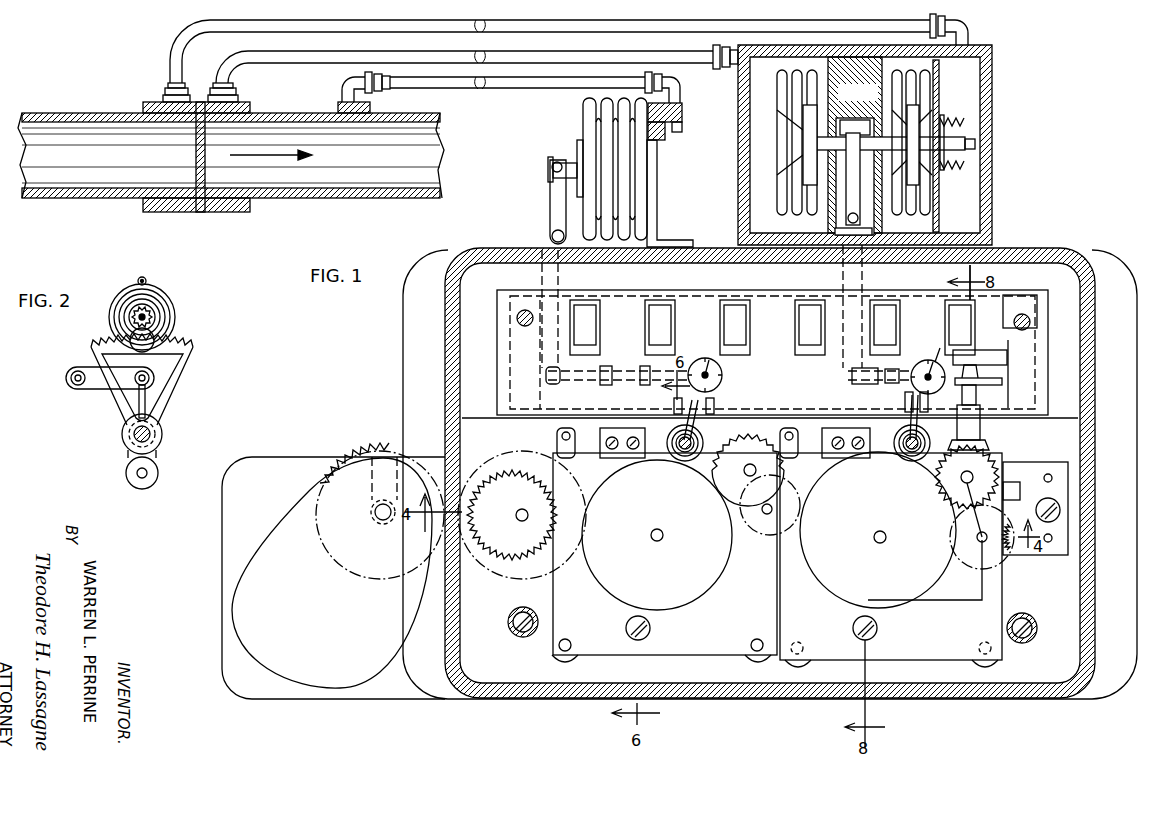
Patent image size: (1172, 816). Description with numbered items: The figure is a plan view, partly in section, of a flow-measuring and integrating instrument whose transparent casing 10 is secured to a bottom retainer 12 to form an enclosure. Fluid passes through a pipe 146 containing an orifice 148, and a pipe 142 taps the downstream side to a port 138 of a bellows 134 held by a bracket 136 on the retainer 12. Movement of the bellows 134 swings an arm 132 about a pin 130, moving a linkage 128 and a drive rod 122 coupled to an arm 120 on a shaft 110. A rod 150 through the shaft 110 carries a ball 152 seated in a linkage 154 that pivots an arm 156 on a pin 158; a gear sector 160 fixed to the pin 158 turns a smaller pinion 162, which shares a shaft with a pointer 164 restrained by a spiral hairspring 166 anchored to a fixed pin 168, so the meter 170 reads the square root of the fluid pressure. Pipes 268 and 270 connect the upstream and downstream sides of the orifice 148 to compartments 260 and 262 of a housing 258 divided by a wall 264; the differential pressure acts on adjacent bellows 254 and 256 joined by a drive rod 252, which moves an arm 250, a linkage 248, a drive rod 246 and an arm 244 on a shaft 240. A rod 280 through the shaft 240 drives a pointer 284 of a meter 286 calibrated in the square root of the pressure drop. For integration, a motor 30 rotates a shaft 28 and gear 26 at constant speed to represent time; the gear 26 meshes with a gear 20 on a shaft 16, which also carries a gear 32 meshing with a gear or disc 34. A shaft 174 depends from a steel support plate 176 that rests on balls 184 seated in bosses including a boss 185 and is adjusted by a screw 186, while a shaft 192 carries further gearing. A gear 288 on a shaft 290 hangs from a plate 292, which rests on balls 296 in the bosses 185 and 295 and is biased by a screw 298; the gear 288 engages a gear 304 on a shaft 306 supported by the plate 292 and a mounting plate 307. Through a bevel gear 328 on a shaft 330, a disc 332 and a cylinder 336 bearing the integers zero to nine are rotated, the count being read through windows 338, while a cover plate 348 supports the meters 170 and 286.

In FIG. 1, the casing 10 is at (705, 258).
In FIG. 1, the bottom retainer 12 is at (403, 330).
In FIG. 1, the shaft 16 is at (519, 521).
In FIG. 1, the gear 20 is at (506, 614).
In FIG. 1, the gear 26 is at (352, 448).
In FIG. 1, the shaft 28 is at (375, 513).
In FIG. 1, the motor 30 is at (372, 682).
In FIG. 1, the gear 32 is at (503, 470).
In FIG. 1, the gear or disc 34 is at (583, 565).
In FIG. 1, the shaft 110 is at (680, 460).
In FIG. 1, the arm 120 is at (660, 386).
In FIG. 1, the drive rod 122 is at (570, 383).
In FIG. 1, the linkage 128 is at (542, 262).
In FIG. 1, the pin 130 is at (552, 233).
In FIG. 1, the arm 132 is at (550, 191).
In FIG. 1, the bellows 134 is at (588, 130).
In FIG. 1, the bracket 136 is at (668, 242).
In FIG. 1, the port 138 is at (668, 136).
In FIG. 1, the pipe 142 is at (489, 87).
In FIG. 1, the pipe 146 is at (440, 192).
In FIG. 1, the orifice 148 is at (205, 165).
In FIG. 1, the rod 150 is at (676, 412).
In FIG. 2, the rod 150 is at (72, 373).
In FIG. 2, the ball 152 is at (71, 382).
In FIG. 1, the linkage 154 is at (716, 408).
In FIG. 2, the linkage 154 is at (97, 390).
In FIG. 2, the arm 156 is at (146, 402).
In FIG. 2, the pin 158 is at (150, 440).
In FIG. 2, the gear sector 160 is at (185, 348).
In FIG. 2, the pinion 162 is at (152, 318).
In FIG. 1, the pointer 164 is at (722, 375).
In FIG. 2, the spiral hairspring 166 is at (173, 300).
In FIG. 2, the fixed pin 168 is at (139, 278).
In FIG. 1, the meter 170 is at (722, 386).
In FIG. 1, the shaft 174 is at (655, 541).
In FIG. 1, the support plate 176 is at (683, 660).
In FIG. 1, the balls 184 is at (565, 652).
In FIG. 1, the boss 185 is at (795, 656).
In FIG. 1, the screw 186 is at (652, 628).
In FIG. 1, the shaft 192 is at (750, 476).
In FIG. 1, the shaft 240 is at (912, 462).
In FIG. 1, the arm 244 is at (905, 400).
In FIG. 1, the drive rod 246 is at (852, 375).
In FIG. 1, the linkage 248 is at (843, 280).
In FIG. 1, the arm 250 is at (862, 260).
In FIG. 1, the drive rod 252 is at (972, 135).
In FIG. 1, the bellows 254 is at (778, 200).
In FIG. 1, the bellows 256 is at (928, 94).
In FIG. 1, the housing 258 is at (992, 182).
In FIG. 1, the compartment 260 is at (752, 170).
In FIG. 1, the compartment 262 is at (972, 110).
In FIG. 1, the wall 264 is at (855, 146).
In FIG. 1, the pipe 268 is at (245, 62).
In FIG. 1, the pipe 270 is at (185, 54).
In FIG. 1, the rod 280 is at (905, 425).
In FIG. 1, the pointer 284 is at (938, 362).
In FIG. 1, the meter 286 is at (926, 370).
In FIG. 1, the gear 288 is at (900, 600).
In FIG. 1, the shaft 290 is at (877, 543).
In FIG. 1, the plate 292 is at (903, 662).
In FIG. 1, the boss 295 is at (995, 662).
In FIG. 1, the balls 296 is at (812, 683).
In FIG. 1, the screw 298 is at (853, 628).
In FIG. 1, the gear 304 is at (995, 463).
In FIG. 1, the shaft 306 is at (985, 470).
In FIG. 1, the mounting plate 307 is at (1045, 556).
In FIG. 1, the bevel gear 328 is at (988, 446).
In FIG. 1, the shaft 330 is at (978, 396).
In FIG. 1, the disc 332 is at (1002, 381).
In FIG. 1, the cylinder 336 is at (1007, 357).
In FIG. 1, the windows 338 is at (983, 334).
In FIG. 1, the cover plate 348 is at (540, 368).